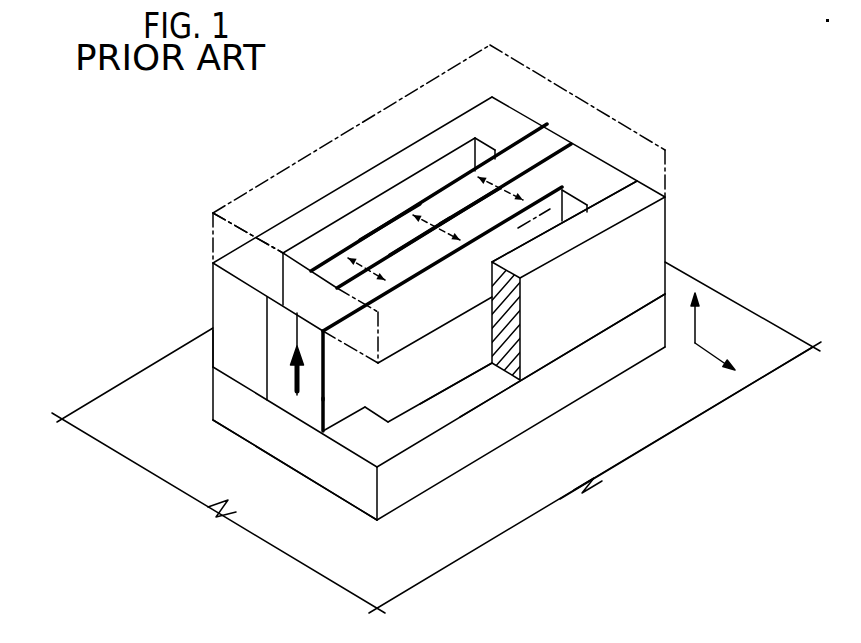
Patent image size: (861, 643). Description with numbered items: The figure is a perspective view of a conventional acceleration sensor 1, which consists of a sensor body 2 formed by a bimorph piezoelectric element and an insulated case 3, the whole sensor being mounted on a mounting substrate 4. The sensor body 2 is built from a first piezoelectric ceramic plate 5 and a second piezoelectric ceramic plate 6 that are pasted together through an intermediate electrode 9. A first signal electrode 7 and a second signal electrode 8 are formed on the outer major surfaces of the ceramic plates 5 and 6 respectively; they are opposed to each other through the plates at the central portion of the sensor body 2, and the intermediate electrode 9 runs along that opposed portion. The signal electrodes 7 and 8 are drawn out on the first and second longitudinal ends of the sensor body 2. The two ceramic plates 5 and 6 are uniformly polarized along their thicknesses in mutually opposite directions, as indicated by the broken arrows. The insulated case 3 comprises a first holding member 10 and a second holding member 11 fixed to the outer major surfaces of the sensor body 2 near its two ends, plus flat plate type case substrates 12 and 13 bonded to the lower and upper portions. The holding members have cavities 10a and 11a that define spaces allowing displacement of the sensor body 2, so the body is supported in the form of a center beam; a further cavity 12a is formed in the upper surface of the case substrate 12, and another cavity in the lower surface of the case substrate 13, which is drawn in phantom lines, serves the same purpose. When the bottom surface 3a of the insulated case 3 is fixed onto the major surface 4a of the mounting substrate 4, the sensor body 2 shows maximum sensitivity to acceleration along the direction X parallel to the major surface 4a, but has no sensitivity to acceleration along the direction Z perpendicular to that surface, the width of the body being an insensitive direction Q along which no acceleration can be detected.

The acceleration sensor 1 is at (260, 150).
The sensor body 2 is at (427, 195).
The insulated case 3 is at (72, 184).
The bottom surface 3a is at (233, 446).
The mounting substrate 4 is at (120, 415).
The major surface 4a is at (663, 415).
The first piezoelectric ceramic plate 5 is at (407, 260).
The second piezoelectric ceramic plate 6 is at (367, 250).
The first signal electrode 7 is at (387, 375).
The second signal electrode 8 is at (494, 150).
The intermediate electrode 9 is at (463, 205).
The first holding member 10 is at (213, 310).
The cavity 10a is at (303, 255).
The second holding member 11 is at (213, 344).
The cavity 11a is at (540, 228).
The case substrate 12 is at (213, 392).
The cavity 12a is at (457, 370).
The case substrate 13 is at (210, 243).
The insensitive direction Q is at (318, 381).
The direction X is at (714, 352).
The direction Z is at (697, 322).